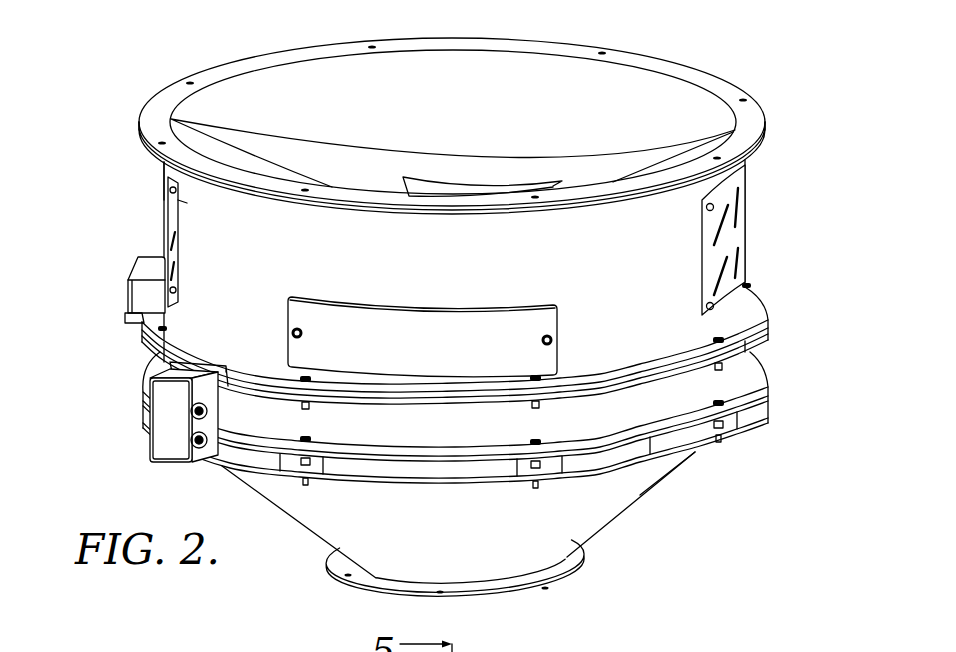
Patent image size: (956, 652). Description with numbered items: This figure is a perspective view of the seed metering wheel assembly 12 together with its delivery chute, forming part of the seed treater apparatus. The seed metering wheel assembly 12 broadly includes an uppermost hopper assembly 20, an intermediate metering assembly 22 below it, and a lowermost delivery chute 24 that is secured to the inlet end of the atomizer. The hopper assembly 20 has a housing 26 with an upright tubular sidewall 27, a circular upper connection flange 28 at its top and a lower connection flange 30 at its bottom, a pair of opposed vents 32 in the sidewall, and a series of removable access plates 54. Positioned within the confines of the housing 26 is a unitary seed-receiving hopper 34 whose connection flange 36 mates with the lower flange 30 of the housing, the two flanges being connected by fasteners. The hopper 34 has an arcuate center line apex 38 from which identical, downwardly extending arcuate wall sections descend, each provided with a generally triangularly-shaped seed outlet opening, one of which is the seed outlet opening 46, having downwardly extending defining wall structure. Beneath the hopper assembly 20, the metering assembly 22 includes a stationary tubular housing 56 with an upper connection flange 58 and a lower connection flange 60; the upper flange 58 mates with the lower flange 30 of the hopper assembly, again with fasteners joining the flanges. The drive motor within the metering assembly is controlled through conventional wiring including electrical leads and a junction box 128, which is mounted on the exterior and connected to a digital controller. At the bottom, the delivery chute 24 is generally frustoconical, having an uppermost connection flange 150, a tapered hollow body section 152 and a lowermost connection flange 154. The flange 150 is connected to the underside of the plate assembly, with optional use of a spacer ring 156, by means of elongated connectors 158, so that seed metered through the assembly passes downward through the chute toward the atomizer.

The seed metering wheel assembly 12 is at (786, 64).
The hopper assembly 20 is at (128, 122).
The metering assembly 22 is at (136, 235).
The delivery chute 24 is at (622, 529).
The housing 26 is at (748, 167).
The upright tubular sidewall 27 is at (187, 203).
The upper connection flange 28 is at (262, 192).
The lower connection flange 30 is at (255, 372).
The vents 32 is at (175, 266).
The seed-receiving hopper 34 is at (318, 76).
The connection flange 36 is at (648, 62).
The arcuate center line apex 38 is at (270, 158).
The seed outlet opening 46 is at (460, 190).
The removable access plates 54 is at (425, 323).
The tubular housing 56 is at (733, 372).
The upper connection flange 58 is at (682, 372).
The lower connection flange 60 is at (757, 380).
The junction box 128 is at (157, 437).
The uppermost connection flange 150 is at (697, 453).
The tapered hollow body section 152 is at (337, 520).
The lowermost connection flange 154 is at (493, 588).
The spacer ring 156 is at (752, 417).
The elongated connectors 158 is at (533, 488).